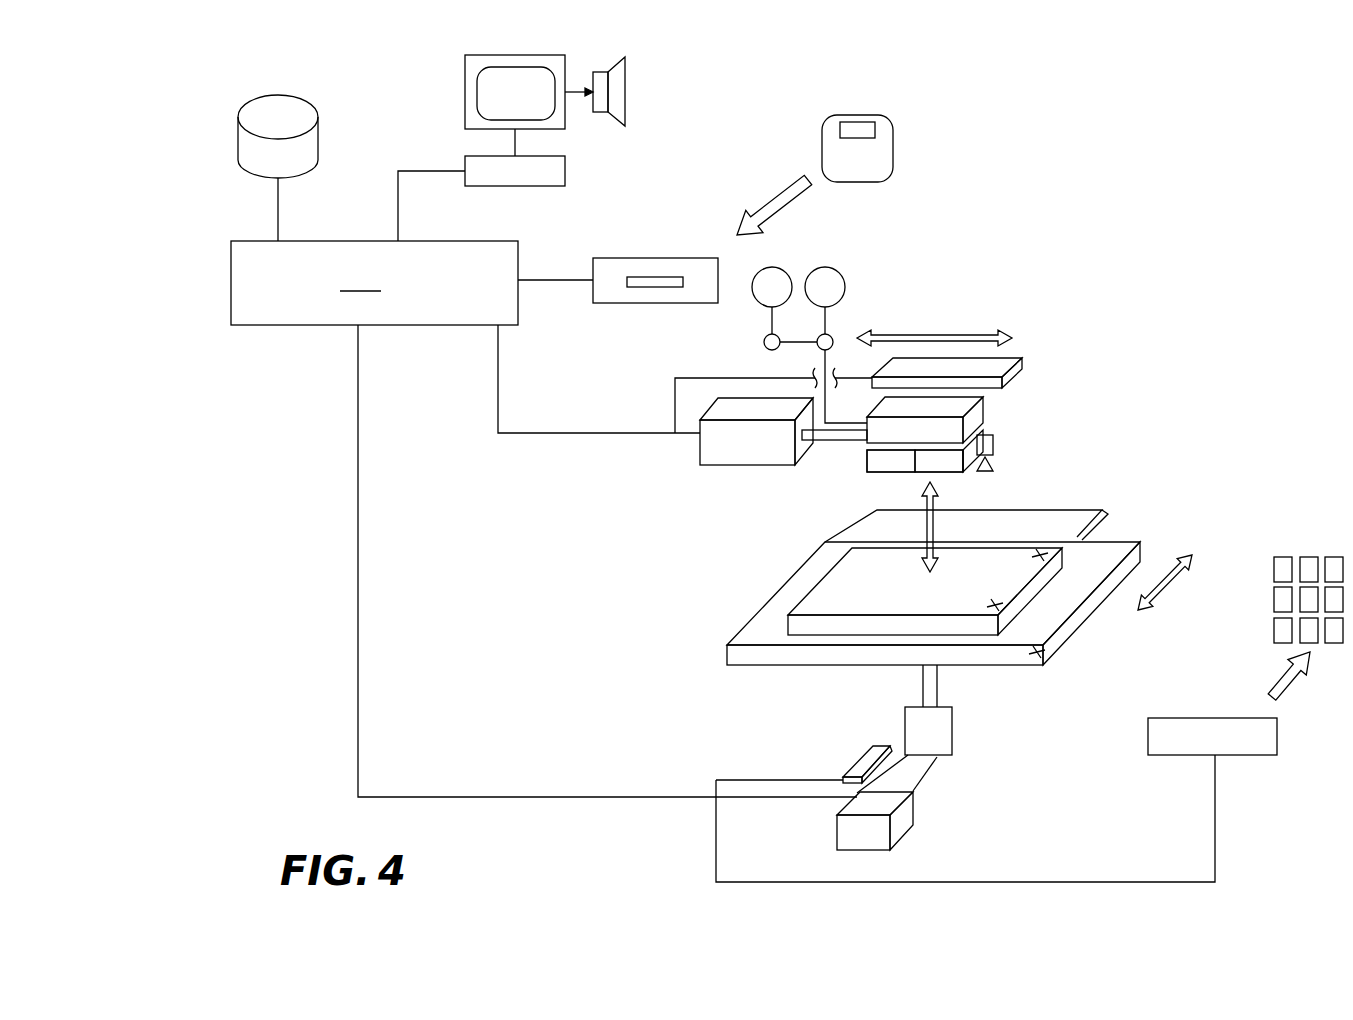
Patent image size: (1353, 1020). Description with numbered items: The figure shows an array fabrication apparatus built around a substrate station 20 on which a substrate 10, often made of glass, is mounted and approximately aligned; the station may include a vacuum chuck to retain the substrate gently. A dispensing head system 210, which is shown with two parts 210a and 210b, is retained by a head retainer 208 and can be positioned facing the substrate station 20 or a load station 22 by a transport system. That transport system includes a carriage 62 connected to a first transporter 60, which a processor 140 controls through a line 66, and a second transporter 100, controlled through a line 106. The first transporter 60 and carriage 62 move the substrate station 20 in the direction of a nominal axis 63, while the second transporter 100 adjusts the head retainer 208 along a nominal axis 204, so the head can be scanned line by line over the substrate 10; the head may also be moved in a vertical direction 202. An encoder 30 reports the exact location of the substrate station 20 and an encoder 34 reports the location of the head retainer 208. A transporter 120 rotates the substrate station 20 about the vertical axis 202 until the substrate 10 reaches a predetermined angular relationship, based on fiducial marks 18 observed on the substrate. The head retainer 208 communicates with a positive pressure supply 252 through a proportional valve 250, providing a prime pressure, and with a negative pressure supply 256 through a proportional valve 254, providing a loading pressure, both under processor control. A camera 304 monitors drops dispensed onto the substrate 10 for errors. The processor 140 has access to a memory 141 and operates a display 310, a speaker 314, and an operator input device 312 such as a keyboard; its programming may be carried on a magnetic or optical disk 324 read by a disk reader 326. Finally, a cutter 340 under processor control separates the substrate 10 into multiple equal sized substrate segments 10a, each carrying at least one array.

The memory 141 is at (240, 172).
The processor 140 is at (374, 283).
The display 310 is at (465, 90).
The operator input device 312 is at (565, 172).
The speaker 314 is at (625, 83).
The magnetic or optical disk 324 is at (872, 115).
The disk reader 326 is at (700, 258).
The negative pressure supply 256 is at (760, 302).
The positive pressure supply 252 is at (845, 272).
The proportional valve 254 is at (764, 342).
The proportional valve 250 is at (833, 335).
The nominal axis 204 is at (946, 338).
The encoder 34 is at (1012, 377).
The line 106 is at (600, 432).
The second transporter 100 is at (700, 452).
The head retainer 208 is at (975, 415).
The dispensing head system 210 is at (865, 462).
The first sensor 210a is at (887, 463).
The second sensor 210b is at (940, 465).
The camera 304 is at (995, 448).
The vertical direction 202 is at (935, 525).
The load station 22 is at (1110, 513).
The substrate station 20 is at (1142, 548).
The substrate 10 is at (870, 560).
The fiducial marks 18 is at (997, 607).
The nominal axis 63 is at (1165, 588).
The substrate segments 10a is at (1334, 557).
The line 66 is at (358, 482).
The transporter 120 is at (955, 735).
The carriage 62 is at (925, 783).
The first transporter 60 is at (895, 842).
The encoder 30 is at (855, 758).
The cutter 340 is at (1250, 757).